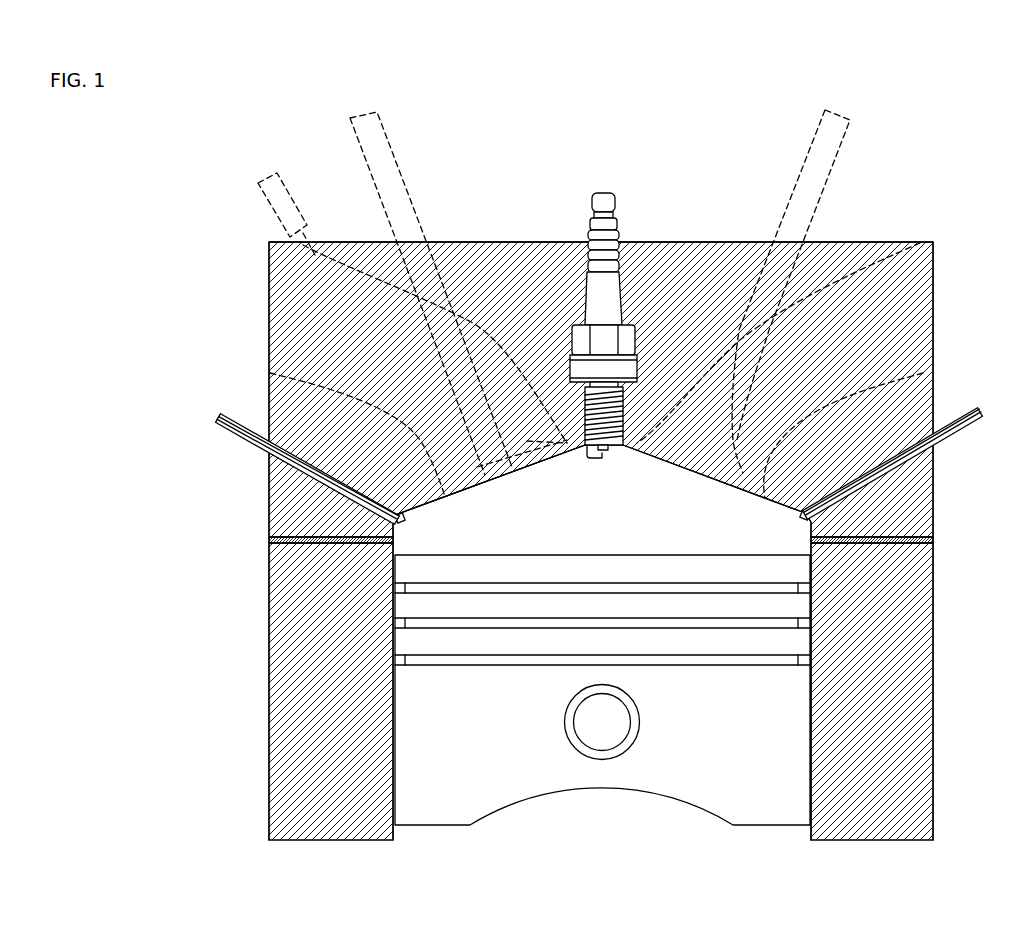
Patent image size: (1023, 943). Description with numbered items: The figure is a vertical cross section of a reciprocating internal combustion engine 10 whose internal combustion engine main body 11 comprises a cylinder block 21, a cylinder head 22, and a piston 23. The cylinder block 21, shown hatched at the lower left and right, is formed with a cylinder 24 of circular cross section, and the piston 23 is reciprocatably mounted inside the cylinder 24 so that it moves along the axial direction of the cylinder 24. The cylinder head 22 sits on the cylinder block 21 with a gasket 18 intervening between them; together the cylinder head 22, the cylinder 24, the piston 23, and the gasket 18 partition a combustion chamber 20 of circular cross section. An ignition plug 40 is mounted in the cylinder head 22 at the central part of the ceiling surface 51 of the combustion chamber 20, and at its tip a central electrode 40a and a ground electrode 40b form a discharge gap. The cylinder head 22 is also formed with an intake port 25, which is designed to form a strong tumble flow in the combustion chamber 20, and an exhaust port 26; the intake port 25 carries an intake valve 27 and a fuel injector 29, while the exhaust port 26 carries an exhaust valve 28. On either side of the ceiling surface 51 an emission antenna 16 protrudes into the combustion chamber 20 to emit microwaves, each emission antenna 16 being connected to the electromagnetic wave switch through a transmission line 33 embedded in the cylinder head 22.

The internal combustion engine 10 is at (757, 133).
The internal combustion engine main body 11 is at (673, 178).
The emission antenna 16 is at (406, 520).
The gasket 18 is at (935, 541).
The combustion chamber 20 is at (620, 531).
The cylinder block 21 is at (918, 668).
The cylinder head 22 is at (915, 497).
The piston 23 is at (750, 808).
The cylinder 24 is at (400, 543).
The intake port 25 is at (270, 280).
The exhaust port 26 is at (883, 243).
The intake valve 27 is at (397, 165).
The exhaust valve 28 is at (840, 143).
The injector 29 is at (283, 183).
The transmission line 33 is at (250, 430).
The ignition plug 40 is at (620, 275).
The central electrode 40a is at (606, 451).
The ground electrode 40b is at (597, 462).
The ceiling surface 51 is at (511, 470).